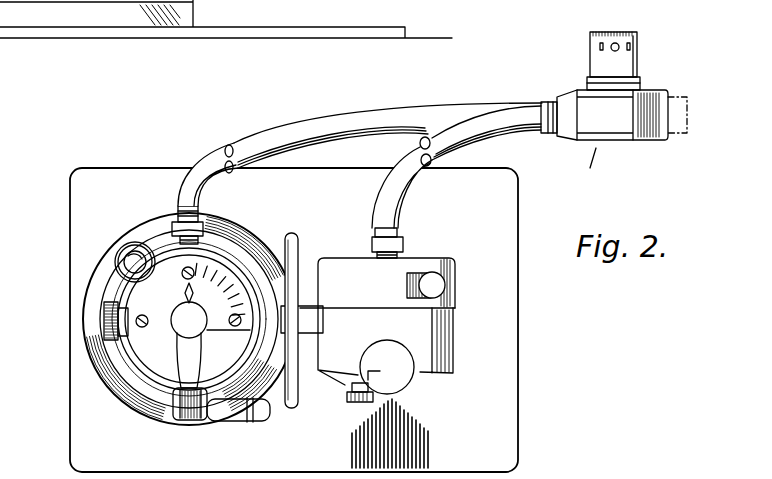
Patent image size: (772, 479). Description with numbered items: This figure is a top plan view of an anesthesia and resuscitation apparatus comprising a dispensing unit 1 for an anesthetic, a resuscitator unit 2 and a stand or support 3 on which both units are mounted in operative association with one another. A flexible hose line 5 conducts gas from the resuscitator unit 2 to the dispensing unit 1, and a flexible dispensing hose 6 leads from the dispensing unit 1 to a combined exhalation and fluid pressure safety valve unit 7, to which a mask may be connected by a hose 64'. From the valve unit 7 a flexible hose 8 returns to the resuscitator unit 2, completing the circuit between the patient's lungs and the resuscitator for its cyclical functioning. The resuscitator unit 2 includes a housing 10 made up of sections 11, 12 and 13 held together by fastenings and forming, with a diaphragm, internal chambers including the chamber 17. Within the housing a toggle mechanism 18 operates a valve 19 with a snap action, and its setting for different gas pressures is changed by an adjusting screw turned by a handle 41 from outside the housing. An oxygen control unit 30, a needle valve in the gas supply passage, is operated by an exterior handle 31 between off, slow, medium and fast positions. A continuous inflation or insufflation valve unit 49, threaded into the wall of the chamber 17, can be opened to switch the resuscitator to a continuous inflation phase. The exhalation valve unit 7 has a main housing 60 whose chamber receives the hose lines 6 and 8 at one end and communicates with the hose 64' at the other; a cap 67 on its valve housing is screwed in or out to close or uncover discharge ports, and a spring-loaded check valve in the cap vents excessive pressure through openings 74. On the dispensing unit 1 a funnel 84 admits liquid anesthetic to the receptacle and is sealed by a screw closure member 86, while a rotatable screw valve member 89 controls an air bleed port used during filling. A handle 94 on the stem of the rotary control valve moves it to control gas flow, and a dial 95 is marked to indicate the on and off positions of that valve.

The dispensing unit 1 is at (105, 290).
The resuscitator unit 2 is at (462, 248).
The stand or support 3 is at (251, 268).
The flexible hose line 5 is at (262, 412).
The flexible dispensing hose 6 is at (313, 128).
The combined exhalation and fluid pressure safety valve unit 7 is at (308, 308).
The flexible hose 8 is at (490, 125).
The housing 10 is at (418, 262).
The housing section 11 is at (423, 373).
The housing section 12 is at (188, 218).
The housing section 13 is at (347, 268).
The chamber 17 is at (115, 228).
The toggle mechanism 18 is at (100, 323).
The valve 19 is at (577, 15).
The oxygen control unit 30 is at (403, 395).
The handle 31 is at (387, 343).
The handle 41 is at (350, 405).
The continuous inflation or insufflation valve unit 49 is at (403, 285).
The main housing 60 is at (577, 106).
The hose 64' is at (688, 130).
The cap 67 is at (600, 58).
The openings 74 is at (614, 43).
The funnel 84 is at (138, 243).
The screw closure member 86 is at (133, 262).
The rotatable screw valve member 89 is at (104, 309).
The handle 94 is at (185, 368).
The dial 95 is at (160, 357).